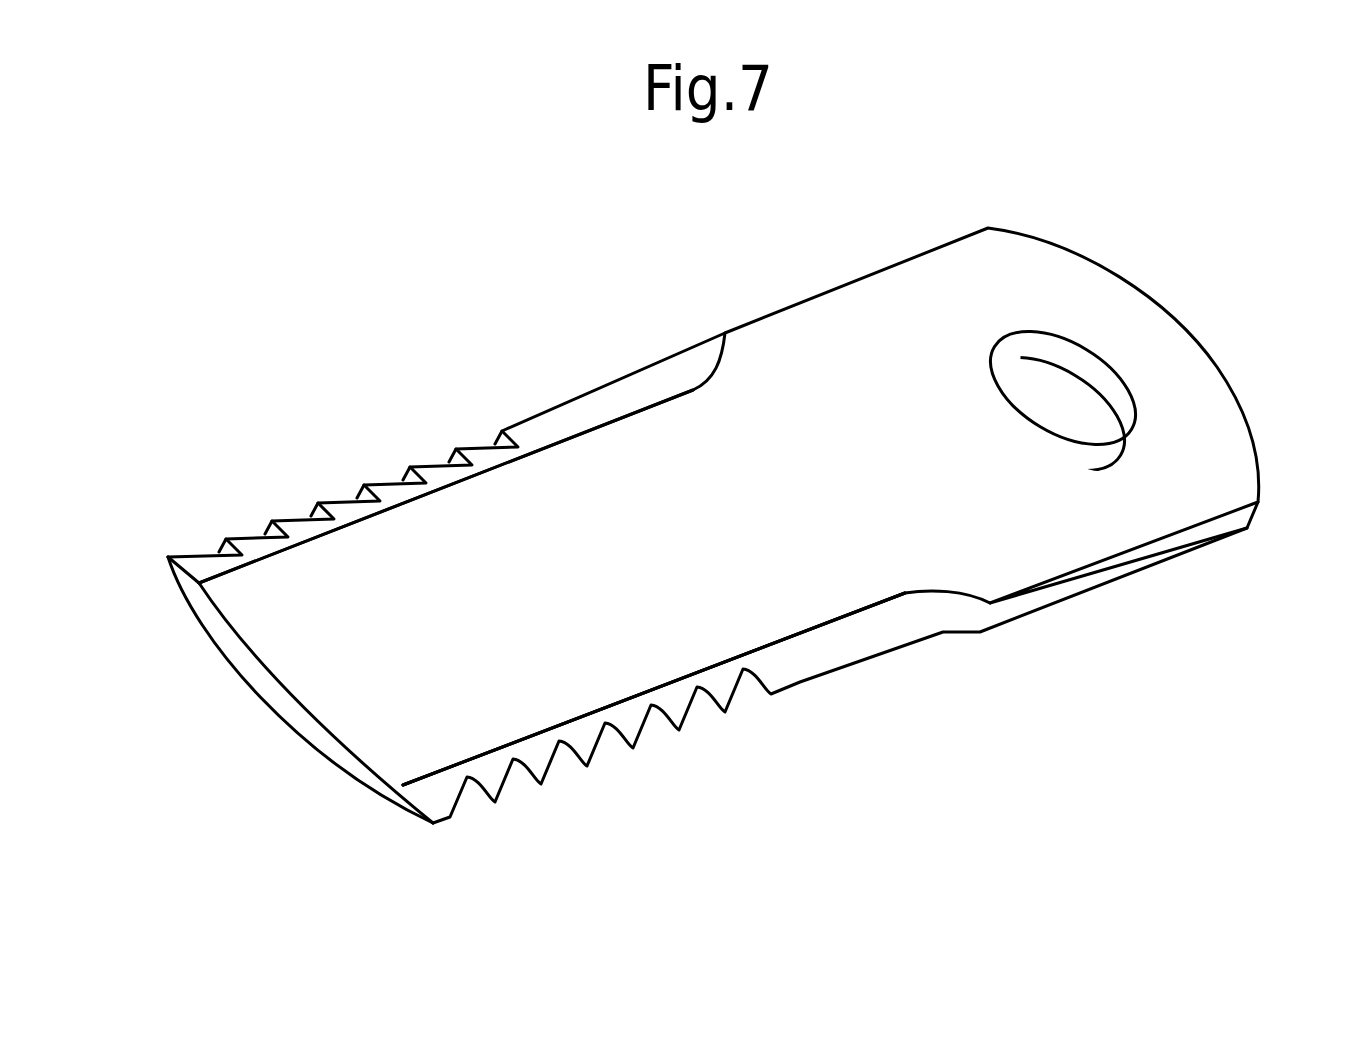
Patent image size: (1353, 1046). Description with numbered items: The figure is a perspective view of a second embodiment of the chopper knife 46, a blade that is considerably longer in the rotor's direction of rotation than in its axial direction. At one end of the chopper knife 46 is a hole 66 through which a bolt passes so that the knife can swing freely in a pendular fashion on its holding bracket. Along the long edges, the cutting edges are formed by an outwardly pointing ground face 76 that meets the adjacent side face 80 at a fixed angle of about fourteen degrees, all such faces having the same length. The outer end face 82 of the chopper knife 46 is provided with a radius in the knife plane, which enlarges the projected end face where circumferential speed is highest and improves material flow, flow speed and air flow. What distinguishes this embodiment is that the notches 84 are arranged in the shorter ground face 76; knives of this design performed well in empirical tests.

The chopper knife 46 is at (1050, 535).
The hole 66 is at (1073, 390).
The outer ground face 76 is at (348, 513).
The side face 80 is at (583, 495).
The outer end face 82 is at (285, 705).
The notch 84 is at (748, 693).